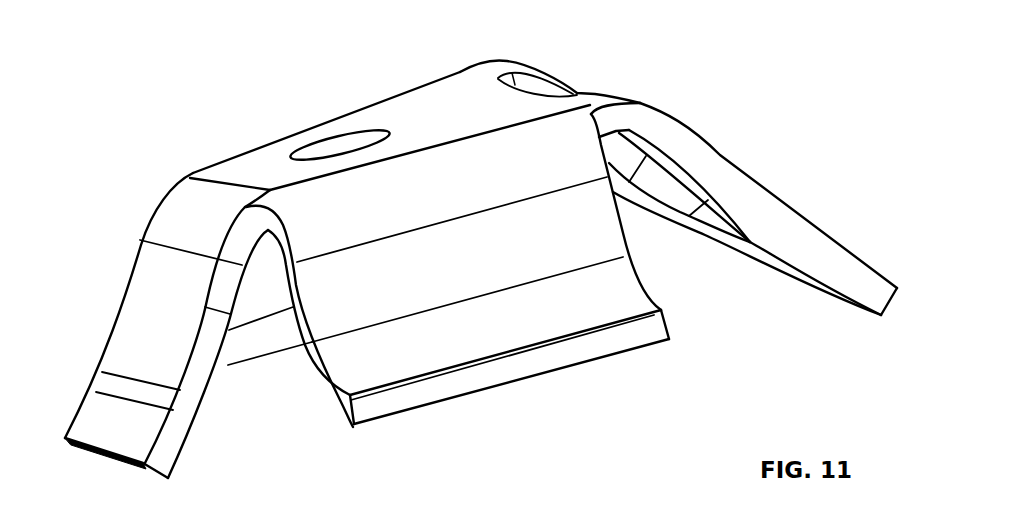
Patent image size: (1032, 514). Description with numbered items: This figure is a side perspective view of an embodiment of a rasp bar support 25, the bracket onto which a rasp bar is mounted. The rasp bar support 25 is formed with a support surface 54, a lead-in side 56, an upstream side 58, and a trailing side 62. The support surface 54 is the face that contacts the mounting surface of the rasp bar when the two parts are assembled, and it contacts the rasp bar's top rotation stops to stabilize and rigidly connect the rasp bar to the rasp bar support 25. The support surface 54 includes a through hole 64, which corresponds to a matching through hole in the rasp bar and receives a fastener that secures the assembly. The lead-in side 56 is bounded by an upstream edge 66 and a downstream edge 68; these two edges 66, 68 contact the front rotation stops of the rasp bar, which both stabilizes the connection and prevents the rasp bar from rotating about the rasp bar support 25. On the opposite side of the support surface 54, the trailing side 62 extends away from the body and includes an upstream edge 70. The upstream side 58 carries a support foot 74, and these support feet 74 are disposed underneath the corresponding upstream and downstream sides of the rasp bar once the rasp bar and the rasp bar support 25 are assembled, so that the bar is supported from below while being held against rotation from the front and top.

The rasp bar support 25 is at (642, 36).
The support surface 54 is at (462, 73).
The lead-in side 56 is at (134, 258).
The upstream side 58 is at (608, 232).
The trailing side 62 is at (738, 167).
The through hole 64 is at (338, 143).
The upstream edge 66 is at (211, 357).
The downstream edge 68 is at (115, 311).
The upstream edge 70 is at (785, 224).
The support feet 74 is at (557, 322).